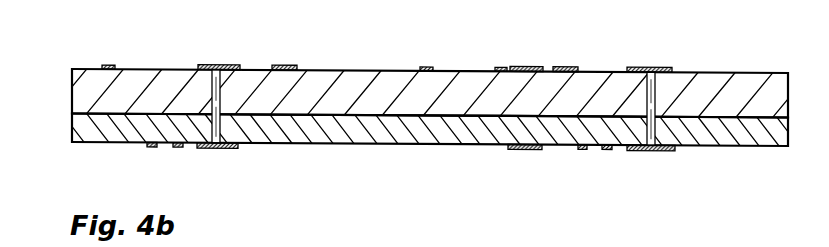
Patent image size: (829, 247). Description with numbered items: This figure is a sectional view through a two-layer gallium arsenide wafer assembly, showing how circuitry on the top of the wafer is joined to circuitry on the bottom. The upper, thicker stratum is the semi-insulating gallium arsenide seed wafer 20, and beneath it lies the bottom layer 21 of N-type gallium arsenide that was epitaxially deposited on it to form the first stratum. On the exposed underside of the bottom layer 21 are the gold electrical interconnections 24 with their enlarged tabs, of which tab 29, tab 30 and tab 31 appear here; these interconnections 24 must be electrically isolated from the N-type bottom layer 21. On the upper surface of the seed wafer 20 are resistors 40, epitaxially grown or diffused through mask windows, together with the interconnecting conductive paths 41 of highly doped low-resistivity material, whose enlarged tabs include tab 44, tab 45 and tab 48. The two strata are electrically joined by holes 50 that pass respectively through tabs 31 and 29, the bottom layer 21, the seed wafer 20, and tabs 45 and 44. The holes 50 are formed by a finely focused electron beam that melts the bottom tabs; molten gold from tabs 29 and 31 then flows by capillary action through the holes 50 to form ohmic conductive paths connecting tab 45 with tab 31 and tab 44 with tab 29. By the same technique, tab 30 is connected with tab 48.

The seed wafer 20 is at (83, 97).
The bottom layer 21 is at (82, 123).
The electrical interconnections 24 is at (178, 147).
The tab 29 is at (223, 148).
The tab 30 is at (522, 151).
The tab 31 is at (652, 151).
The resistors 40 is at (278, 64).
The interconnecting conductive paths 41 is at (107, 63).
The tab 44 is at (234, 63).
The tab 45 is at (645, 63).
The tab 48 is at (520, 66).
The holes 50 is at (210, 90).